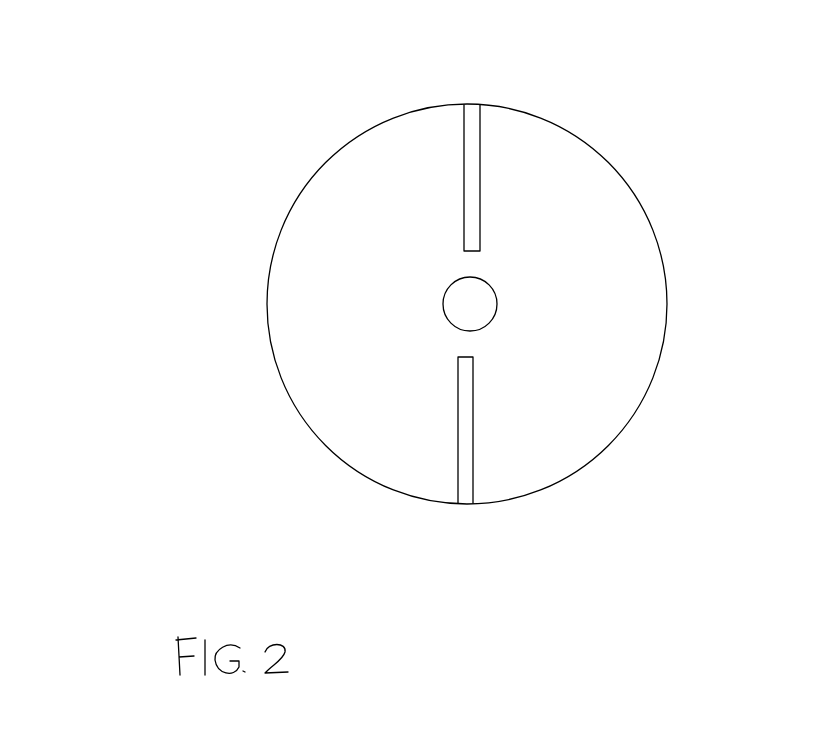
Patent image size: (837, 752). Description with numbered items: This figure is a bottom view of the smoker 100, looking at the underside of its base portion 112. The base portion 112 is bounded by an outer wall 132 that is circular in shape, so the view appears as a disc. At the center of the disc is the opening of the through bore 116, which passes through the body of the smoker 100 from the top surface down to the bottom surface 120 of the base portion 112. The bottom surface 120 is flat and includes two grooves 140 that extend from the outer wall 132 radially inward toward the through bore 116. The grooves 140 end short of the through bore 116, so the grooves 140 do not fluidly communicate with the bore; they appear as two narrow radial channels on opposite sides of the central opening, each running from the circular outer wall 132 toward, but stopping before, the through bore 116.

The smoker 100 is at (208, 61).
The base portion 112 is at (288, 393).
The through bore 116 is at (673, 180).
The bottom surface 120 is at (627, 502).
The outer wall 132 is at (733, 328).
The grooves 140 is at (522, 550).